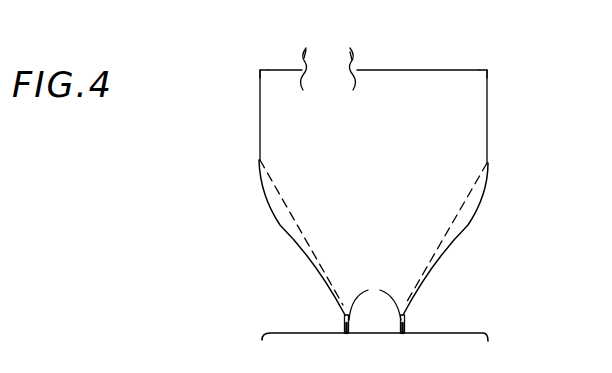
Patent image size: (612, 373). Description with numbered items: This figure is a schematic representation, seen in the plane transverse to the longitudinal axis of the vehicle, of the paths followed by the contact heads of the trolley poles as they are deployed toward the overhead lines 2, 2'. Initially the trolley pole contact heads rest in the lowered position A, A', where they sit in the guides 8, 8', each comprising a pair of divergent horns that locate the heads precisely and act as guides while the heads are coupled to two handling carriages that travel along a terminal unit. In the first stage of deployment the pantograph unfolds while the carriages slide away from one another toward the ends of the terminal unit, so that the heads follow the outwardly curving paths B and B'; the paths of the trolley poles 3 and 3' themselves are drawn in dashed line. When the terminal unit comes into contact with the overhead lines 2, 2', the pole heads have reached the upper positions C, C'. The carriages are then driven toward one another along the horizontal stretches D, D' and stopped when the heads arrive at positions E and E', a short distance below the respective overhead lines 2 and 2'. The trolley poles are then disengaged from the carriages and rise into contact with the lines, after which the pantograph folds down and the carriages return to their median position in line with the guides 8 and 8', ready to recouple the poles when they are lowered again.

The overhead line 2 is at (303, 38).
The overhead line 2' is at (352, 40).
The trolley pole 3 is at (301, 232).
The trolley pole 3' is at (446, 234).
The guide 8 is at (302, 237).
The guide 8' is at (445, 239).
The lowered position A is at (316, 317).
The lowered position A' is at (432, 318).
The path B is at (231, 115).
The path B' is at (518, 116).
The position C is at (235, 63).
The position C' is at (514, 58).
The carriage movement path D is at (274, 51).
The carriage movement path D' is at (418, 51).
The position E is at (305, 79).
The position E' is at (351, 79).